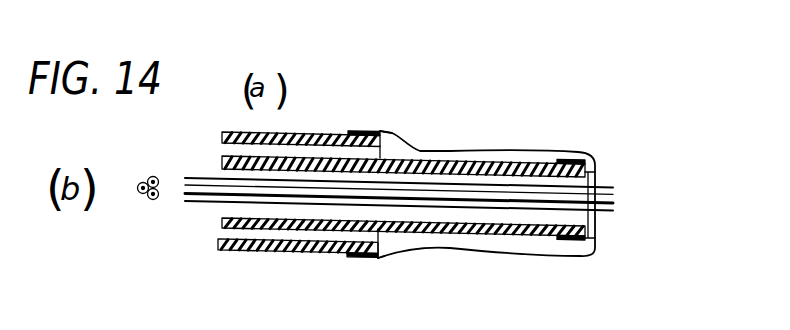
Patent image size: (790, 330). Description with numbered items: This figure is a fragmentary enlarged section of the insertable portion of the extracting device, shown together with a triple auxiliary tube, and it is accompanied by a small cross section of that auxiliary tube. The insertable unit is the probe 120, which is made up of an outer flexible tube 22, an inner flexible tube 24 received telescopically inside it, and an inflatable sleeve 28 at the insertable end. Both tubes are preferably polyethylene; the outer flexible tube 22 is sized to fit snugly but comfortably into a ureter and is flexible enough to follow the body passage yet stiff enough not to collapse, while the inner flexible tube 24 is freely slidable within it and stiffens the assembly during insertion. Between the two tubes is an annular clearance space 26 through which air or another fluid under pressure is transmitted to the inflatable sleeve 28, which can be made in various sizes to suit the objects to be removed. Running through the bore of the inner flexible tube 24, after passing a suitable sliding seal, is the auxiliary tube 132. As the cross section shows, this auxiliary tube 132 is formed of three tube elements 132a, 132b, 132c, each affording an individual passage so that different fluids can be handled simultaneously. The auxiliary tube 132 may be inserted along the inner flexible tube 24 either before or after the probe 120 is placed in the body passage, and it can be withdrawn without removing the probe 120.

The outer flexible tube 22 is at (302, 133).
The inner flexible tube 24 is at (339, 230).
The annular clearance space 26 is at (234, 237).
The inflatable sleeve 28 is at (451, 150).
The probe 120 is at (574, 127).
The auxiliary tube 132 is at (206, 178).
The tube element 132a is at (151, 176).
The tube element 132b is at (150, 199).
The tube element 132c is at (140, 193).